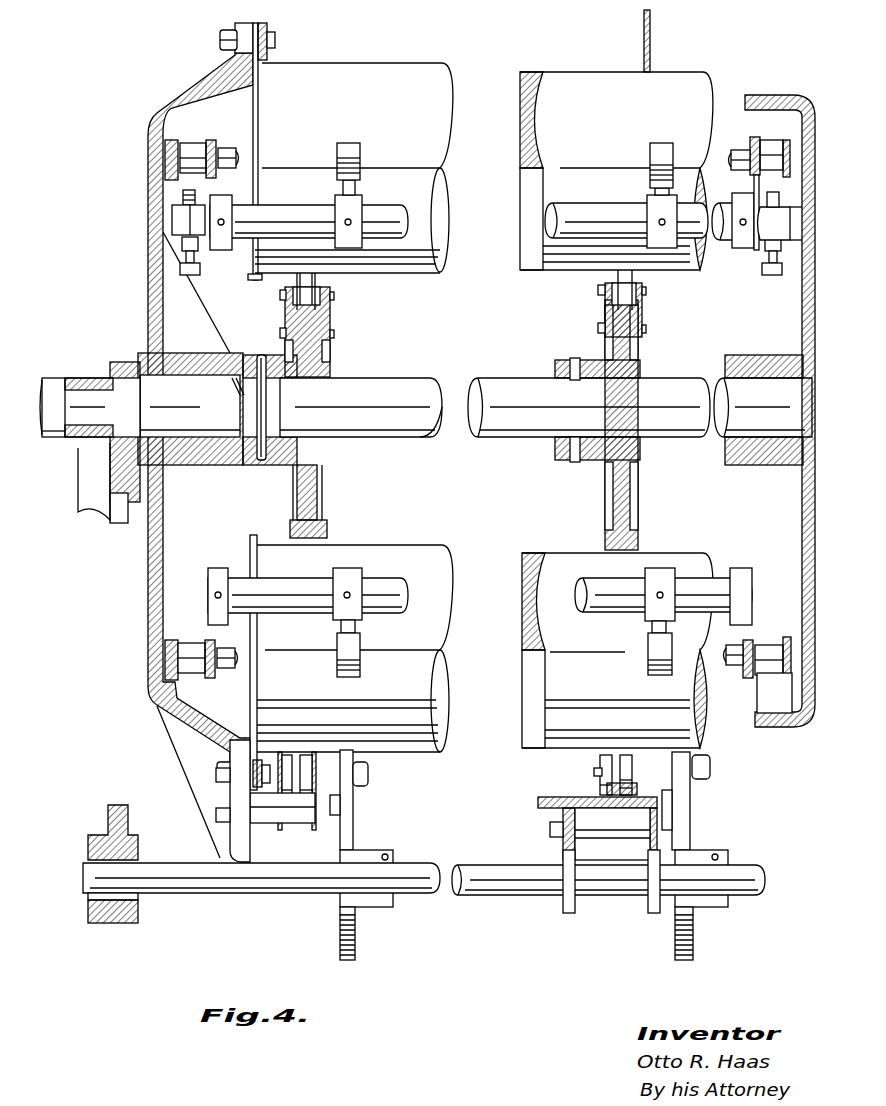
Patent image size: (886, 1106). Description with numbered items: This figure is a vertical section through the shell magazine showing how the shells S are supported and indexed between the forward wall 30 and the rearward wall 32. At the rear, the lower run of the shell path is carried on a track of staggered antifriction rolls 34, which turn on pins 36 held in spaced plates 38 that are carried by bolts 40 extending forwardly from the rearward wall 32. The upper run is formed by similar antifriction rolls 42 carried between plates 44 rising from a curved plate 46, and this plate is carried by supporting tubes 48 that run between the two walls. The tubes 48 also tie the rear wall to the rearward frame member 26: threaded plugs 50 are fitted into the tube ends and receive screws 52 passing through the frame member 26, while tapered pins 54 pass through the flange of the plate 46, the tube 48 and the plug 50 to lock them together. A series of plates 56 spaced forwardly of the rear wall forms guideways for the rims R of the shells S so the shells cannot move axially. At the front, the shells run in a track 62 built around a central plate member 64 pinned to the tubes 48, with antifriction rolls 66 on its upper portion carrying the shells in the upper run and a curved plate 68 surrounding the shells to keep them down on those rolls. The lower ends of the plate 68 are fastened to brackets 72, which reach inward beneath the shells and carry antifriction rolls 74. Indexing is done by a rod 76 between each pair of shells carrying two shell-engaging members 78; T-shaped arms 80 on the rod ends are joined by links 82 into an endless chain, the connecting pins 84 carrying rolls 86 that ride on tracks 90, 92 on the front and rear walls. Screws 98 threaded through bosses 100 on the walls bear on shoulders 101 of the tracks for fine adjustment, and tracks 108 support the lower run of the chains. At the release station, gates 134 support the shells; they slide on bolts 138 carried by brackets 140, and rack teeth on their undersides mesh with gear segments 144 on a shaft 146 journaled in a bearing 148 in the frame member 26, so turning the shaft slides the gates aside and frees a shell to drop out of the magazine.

The rearward frame member 26 is at (84, 505).
The forward wall 30 is at (782, 97).
The rearward wall 32 is at (148, 148).
The antifriction rolls 34 is at (305, 755).
The pins 36 is at (370, 775).
The spaced plates 38 is at (216, 792).
The bolts 40 is at (328, 822).
The antifriction rolls 42 is at (316, 287).
The plates 44 is at (333, 313).
The curved plate 46 is at (320, 455).
The supporting tubes 48 is at (392, 392).
The threaded plugs 50 is at (245, 396).
The screws 52 is at (86, 395).
The tapered pins 54 is at (261, 356).
The plates 56 is at (268, 24).
The track 62 is at (660, 52).
The central plate member 64 is at (612, 496).
The antifriction rolls 66 is at (636, 275).
The curved plate 68 is at (644, 25).
The brackets 72 is at (580, 797).
The antifriction rolls 74 is at (600, 760).
The rod 76 is at (302, 210).
The shell-engaging members 78 is at (349, 148).
The T-shaped arms 80 is at (232, 188).
The links 82 is at (212, 143).
The pins 84 is at (238, 155).
The rolls 86 is at (195, 143).
The track 90 is at (742, 193).
The track 92 is at (165, 184).
The screws 98 is at (196, 265).
The bosses 100 is at (172, 220).
The shoulders 101 is at (183, 197).
The tracks 108 is at (178, 690).
The gates 134 is at (353, 760).
The bolts 138 is at (370, 785).
The brackets 140 is at (345, 800).
The gear segments 144 is at (355, 946).
The shaft 146 is at (474, 890).
The bearing 148 is at (138, 903).
The shells S is at (380, 42).
The rims R is at (258, 98).